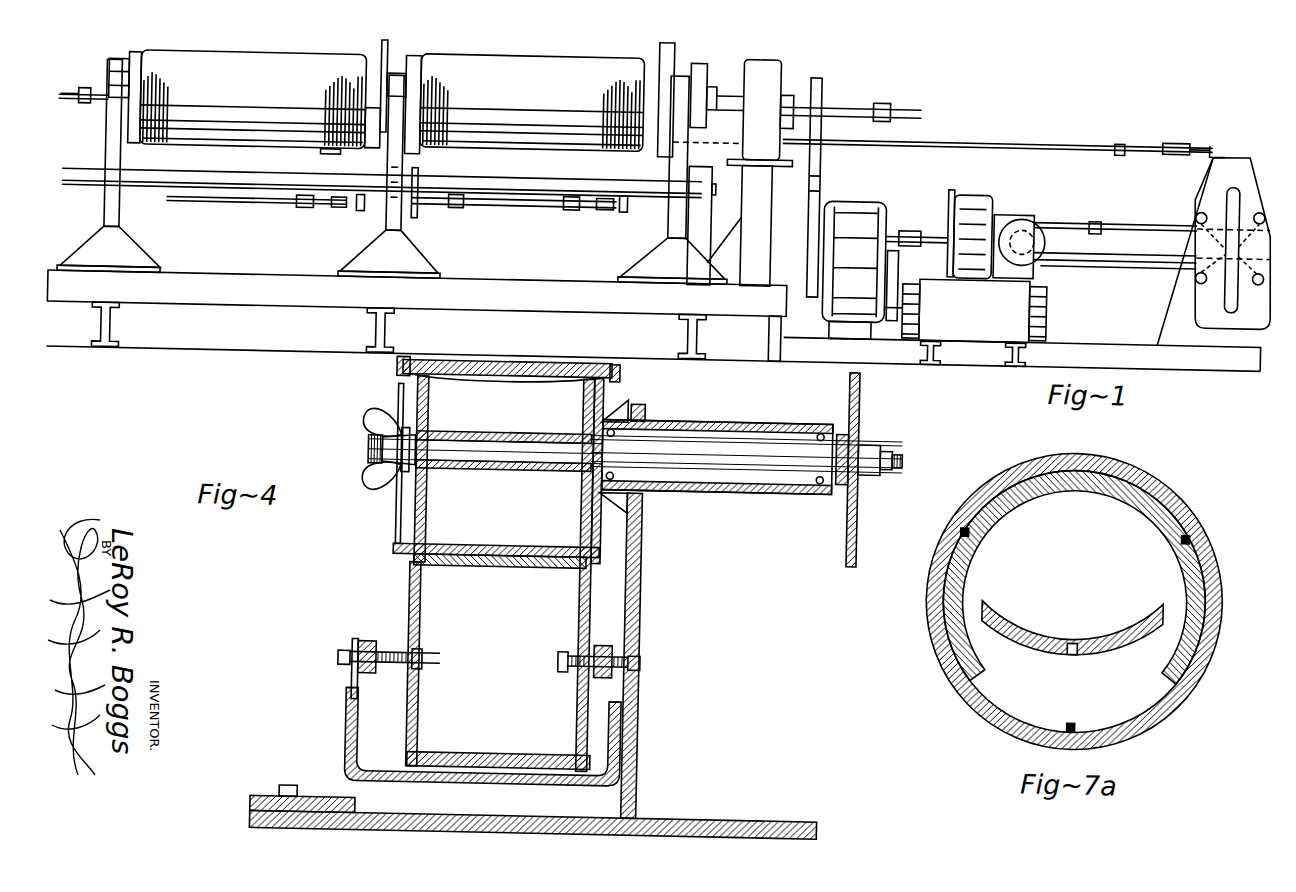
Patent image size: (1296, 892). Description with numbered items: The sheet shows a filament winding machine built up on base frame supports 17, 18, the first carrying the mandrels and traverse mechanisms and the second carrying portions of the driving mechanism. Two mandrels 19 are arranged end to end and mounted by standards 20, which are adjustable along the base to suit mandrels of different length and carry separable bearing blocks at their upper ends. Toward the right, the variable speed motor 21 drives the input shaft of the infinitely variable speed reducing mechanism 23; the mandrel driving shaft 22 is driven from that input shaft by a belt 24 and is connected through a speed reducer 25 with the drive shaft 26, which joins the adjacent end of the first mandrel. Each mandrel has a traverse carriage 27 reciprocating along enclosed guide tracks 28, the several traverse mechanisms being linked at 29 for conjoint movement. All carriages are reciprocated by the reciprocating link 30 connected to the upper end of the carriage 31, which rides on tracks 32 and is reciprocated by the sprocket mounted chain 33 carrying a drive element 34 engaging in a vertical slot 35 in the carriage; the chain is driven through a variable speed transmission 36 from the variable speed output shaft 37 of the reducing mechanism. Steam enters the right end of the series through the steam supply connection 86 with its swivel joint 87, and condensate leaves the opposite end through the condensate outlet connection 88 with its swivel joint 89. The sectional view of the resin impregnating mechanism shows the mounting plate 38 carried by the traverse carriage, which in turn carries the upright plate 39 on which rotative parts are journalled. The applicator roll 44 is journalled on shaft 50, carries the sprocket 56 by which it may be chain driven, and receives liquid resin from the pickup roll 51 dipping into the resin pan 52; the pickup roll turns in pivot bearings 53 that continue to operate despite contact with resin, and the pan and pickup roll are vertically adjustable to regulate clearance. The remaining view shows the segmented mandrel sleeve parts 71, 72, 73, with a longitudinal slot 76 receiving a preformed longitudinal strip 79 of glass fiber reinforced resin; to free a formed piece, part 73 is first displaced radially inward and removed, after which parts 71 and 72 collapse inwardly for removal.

In FIG. 1, the base frame support 17 is at (508, 302).
In FIG. 1, the base frame support 18 is at (890, 347).
In FIG. 1, the mandrel 19 is at (143, 42).
In FIG. 1, the standard 20 is at (118, 212).
In FIG. 1, the variable speed motor 21 is at (1030, 280).
In FIG. 1, the mandrel driving shaft 22 is at (812, 62).
In FIG. 1, the infinitely variable speed reducing mechanism 23 is at (870, 200).
In FIG. 1, the belt 24 is at (815, 172).
In FIG. 1, the speed reducer 25 is at (770, 101).
In FIG. 1, the drive shaft 26 is at (712, 75).
In FIG. 1, the traverse carriage 27 is at (360, 198).
In FIG. 1, the guide tracks 28 is at (422, 172).
In FIG. 1, the link 29 is at (290, 198).
In FIG. 1, the reciprocating link 30 is at (1035, 125).
In FIG. 1, the carriage 31 is at (1203, 152).
In FIG. 1, the tracks 32 is at (1065, 203).
In FIG. 1, the sprocket mounted chain 33 is at (1100, 200).
In FIG. 1, the drive element 34 is at (1180, 283).
In FIG. 1, the vertical slot 35 is at (1225, 195).
In FIG. 1, the variable speed transmission 36 is at (1020, 199).
In FIG. 1, the variable speed output shaft 37 is at (925, 212).
In FIG. 1, the mounting plate 38 is at (322, 149).
In FIG. 4, the mounting plate 38 is at (700, 805).
In FIG. 4, the upright plate 39 is at (647, 548).
In FIG. 4, the applicator roll 44 is at (405, 405).
In FIG. 4, the shaft 50 is at (690, 430).
In FIG. 4, the pickup roll 51 is at (418, 568).
In FIG. 4, the resin pan 52 is at (352, 697).
In FIG. 4, the pivot bearings 53 is at (410, 642).
In FIG. 4, the sprocket 56 is at (852, 495).
In FIG. 7a, the segmented sleeve part 71 is at (1027, 474).
In FIG. 7a, the segmented sleeve part 72 is at (1205, 548).
In FIG. 7a, the segmented sleeve part 73 is at (1082, 615).
In FIG. 7a, the longitudinal slot 76 is at (1073, 632).
In FIG. 7a, the preformed longitudinal strip 79 is at (965, 514).
In FIG. 1, the steam supply connection 86 is at (916, 92).
In FIG. 1, the swivel joint 87 is at (880, 86).
In FIG. 1, the condensate outlet connection 88 is at (103, 78).
In FIG. 1, the swivel joint 89 is at (73, 96).